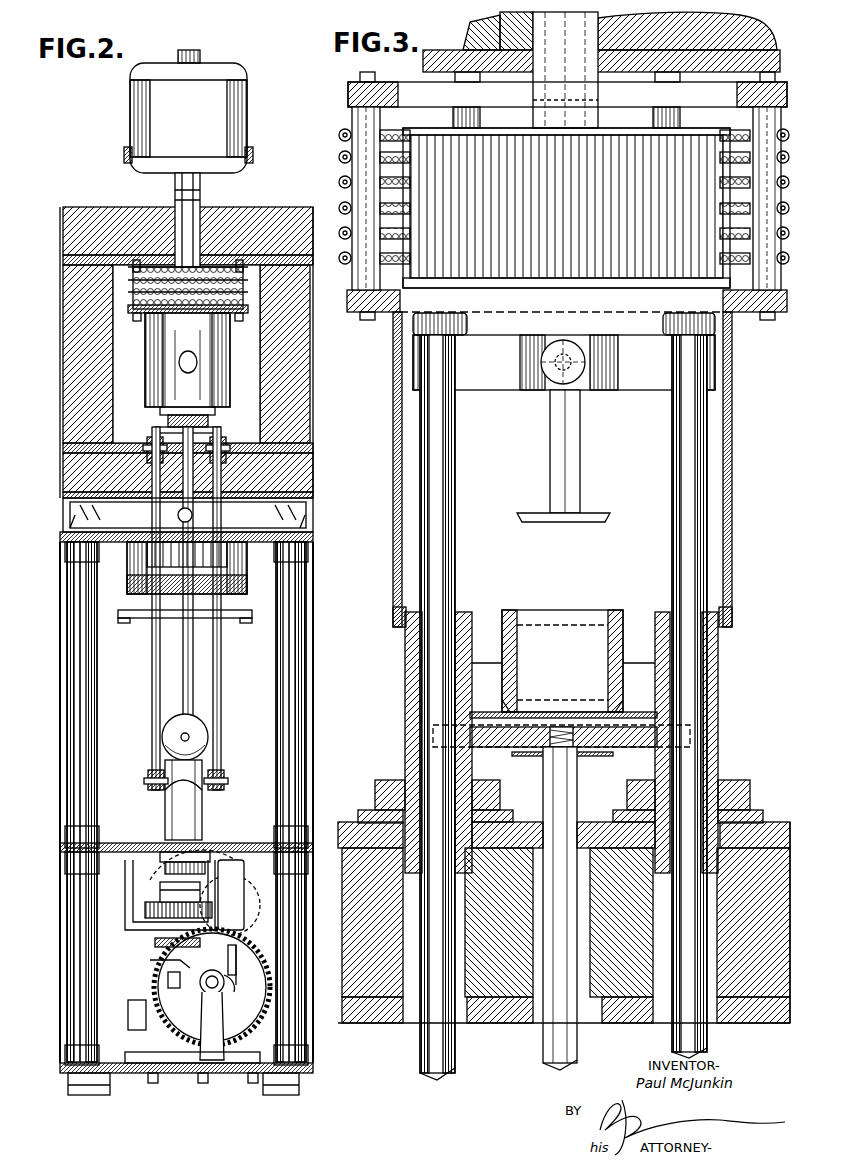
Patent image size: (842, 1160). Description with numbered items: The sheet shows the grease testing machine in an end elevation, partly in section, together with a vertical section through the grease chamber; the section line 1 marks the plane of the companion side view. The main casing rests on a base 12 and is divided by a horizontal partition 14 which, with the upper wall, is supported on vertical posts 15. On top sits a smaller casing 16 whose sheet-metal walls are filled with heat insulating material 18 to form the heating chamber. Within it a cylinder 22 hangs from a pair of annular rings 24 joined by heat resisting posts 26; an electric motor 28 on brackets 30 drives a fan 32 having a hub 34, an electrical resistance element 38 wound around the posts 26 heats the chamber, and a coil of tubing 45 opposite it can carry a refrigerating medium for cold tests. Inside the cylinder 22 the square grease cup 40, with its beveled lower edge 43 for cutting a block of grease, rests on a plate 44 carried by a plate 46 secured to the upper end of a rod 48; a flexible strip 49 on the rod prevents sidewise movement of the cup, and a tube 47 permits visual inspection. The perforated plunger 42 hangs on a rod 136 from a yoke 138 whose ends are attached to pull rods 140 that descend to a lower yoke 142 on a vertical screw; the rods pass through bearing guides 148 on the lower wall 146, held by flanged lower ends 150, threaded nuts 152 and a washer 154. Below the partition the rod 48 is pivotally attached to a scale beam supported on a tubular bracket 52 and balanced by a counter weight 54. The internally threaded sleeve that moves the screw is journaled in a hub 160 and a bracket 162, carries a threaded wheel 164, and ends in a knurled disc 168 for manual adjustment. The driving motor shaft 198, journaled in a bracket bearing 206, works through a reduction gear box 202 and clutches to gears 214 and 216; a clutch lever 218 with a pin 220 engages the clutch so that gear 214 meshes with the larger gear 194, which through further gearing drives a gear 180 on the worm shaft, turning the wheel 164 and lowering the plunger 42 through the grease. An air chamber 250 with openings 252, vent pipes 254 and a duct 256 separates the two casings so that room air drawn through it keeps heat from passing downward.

In FIG. 2, the section line 1 is at (262, 45).
In FIG. 2, the base 12 is at (128, 1078).
In FIG. 2, the horizontal partition 14 is at (228, 848).
In FIG. 2, the vertical posts 15 is at (278, 698).
In FIG. 2, the smaller casing 16 is at (300, 380).
In FIG. 3, the smaller casing 16 is at (488, 50).
In FIG. 2, the heat insulating material 18 is at (90, 302).
In FIG. 3, the heat insulating material 18 is at (515, 25).
In FIG. 2, the cylindrical member 22 is at (222, 372).
In FIG. 3, the cylindrical member 22 is at (396, 472).
In FIG. 3, the annular rings 24 is at (350, 92).
In FIG. 3, the heat resisting rods or posts 26 is at (478, 122).
In FIG. 2, the electric motor 28 is at (238, 118).
In FIG. 2, the brackets 30 is at (201, 197).
In FIG. 3, the brackets 30 is at (380, 850).
In FIG. 3, the fan 32 is at (590, 270).
In FIG. 3, the hub 34 is at (538, 98).
In FIG. 2, the electrical resistance element 38 is at (136, 312).
In FIG. 3, the electrical resistance element 38 is at (340, 182).
In FIG. 2, the grease container or cup 40 is at (200, 409).
In FIG. 3, the grease container or cup 40 is at (520, 648).
In FIG. 3, the perforated plate or plunger 42 is at (598, 520).
In FIG. 3, the beveled lower edge 43 is at (615, 710).
In FIG. 3, the plate 44 is at (485, 710).
In FIG. 2, the coil of tubing 45 is at (243, 314).
In FIG. 3, the plate 46 is at (487, 748).
In FIG. 2, the tube 47 is at (178, 366).
In FIG. 2, the rod 48 is at (186, 652).
In FIG. 3, the rod 48 is at (572, 788).
In FIG. 3, the thin metallic strip or band 49 is at (525, 757).
In FIG. 2, the bracket 52 is at (196, 810).
In FIG. 2, the counter weight 54 is at (198, 738).
In FIG. 3, the rod 136 is at (580, 440).
In FIG. 3, the yoke 138 is at (630, 380).
In FIG. 2, the pull rods 140 is at (152, 686).
In FIG. 3, the pull rods 140 is at (455, 478).
In FIG. 2, the yoke 142 is at (152, 782).
In FIG. 2, the lower wall 146 is at (290, 530).
In FIG. 3, the lower wall 146 is at (362, 1025).
In FIG. 2, the bearing guides 148 is at (152, 420).
In FIG. 3, the bearing guides 148 is at (405, 722).
In FIG. 3, the flanged lower ends 150 is at (745, 832).
In FIG. 3, the threaded nuts 152 is at (385, 780).
In FIG. 3, the washer 154 is at (505, 815).
In FIG. 2, the hub 160 is at (178, 865).
In FIG. 2, the bracket 162 is at (130, 878).
In FIG. 2, the threaded wheel 164 is at (145, 912).
In FIG. 2, the knurled disc 168 is at (228, 970).
In FIG. 2, the gear 180 is at (243, 900).
In FIG. 2, the larger gear 194 is at (158, 942).
In FIG. 2, the motor shaft 198 is at (200, 986).
In FIG. 2, the reduction gear box 202 is at (152, 1000).
In FIG. 2, the bracket bearing 206 is at (205, 1020).
In FIG. 2, the gear 214 is at (150, 960).
In FIG. 2, the gear 216 is at (168, 975).
In FIG. 2, the clutch lever 218 is at (236, 968).
In FIG. 2, the pin 220 is at (230, 988).
In FIG. 2, the air chamber 250 is at (296, 518).
In FIG. 2, the openings 252 is at (68, 530).
In FIG. 2, the vent pipes 254 is at (200, 572).
In FIG. 2, the duct 256 is at (142, 622).